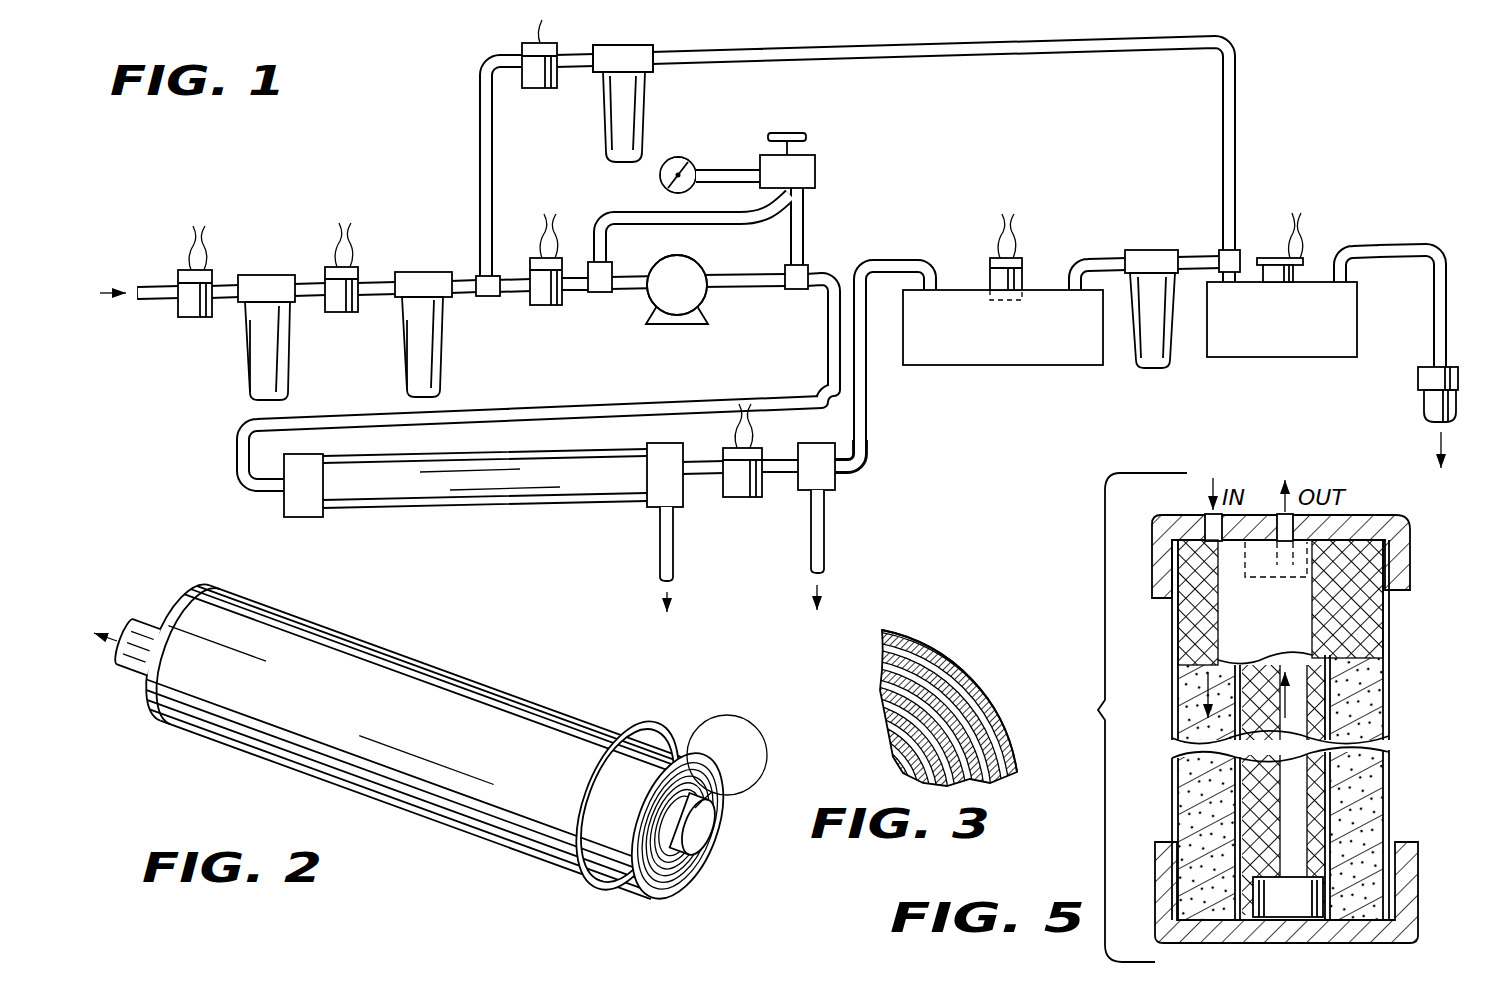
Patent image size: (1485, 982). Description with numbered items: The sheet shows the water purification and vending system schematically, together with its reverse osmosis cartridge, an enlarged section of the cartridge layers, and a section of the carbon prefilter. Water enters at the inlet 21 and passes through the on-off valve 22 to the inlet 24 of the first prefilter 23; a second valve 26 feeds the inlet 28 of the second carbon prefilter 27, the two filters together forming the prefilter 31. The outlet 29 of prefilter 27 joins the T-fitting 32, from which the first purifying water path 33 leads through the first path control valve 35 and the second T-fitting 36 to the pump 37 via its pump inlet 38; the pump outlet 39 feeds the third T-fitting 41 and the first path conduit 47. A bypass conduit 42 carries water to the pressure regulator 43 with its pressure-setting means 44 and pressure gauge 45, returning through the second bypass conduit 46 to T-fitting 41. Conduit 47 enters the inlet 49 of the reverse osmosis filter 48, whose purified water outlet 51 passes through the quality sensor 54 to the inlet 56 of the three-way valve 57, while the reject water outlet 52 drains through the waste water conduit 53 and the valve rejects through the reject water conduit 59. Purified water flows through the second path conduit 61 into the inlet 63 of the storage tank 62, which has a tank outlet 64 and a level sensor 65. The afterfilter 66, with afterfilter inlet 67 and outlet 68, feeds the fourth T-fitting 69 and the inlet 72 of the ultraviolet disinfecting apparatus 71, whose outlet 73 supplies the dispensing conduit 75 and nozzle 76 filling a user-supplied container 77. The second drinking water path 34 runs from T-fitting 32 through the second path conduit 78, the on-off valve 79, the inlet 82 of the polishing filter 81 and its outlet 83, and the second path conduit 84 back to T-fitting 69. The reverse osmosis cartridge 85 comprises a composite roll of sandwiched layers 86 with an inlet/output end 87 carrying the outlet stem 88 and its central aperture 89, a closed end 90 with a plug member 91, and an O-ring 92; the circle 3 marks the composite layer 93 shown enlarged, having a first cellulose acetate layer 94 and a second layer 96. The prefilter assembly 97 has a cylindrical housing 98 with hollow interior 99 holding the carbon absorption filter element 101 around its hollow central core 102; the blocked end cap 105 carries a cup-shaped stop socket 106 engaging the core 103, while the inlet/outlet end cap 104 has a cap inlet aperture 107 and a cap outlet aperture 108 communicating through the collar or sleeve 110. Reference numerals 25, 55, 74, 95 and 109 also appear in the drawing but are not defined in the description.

In FIG. 2, the circle 3 is at (712, 738).
In FIG. 1, the inlet 21 is at (140, 278).
In FIG. 1, the on-off valve 22 is at (192, 265).
In FIG. 1, the first prefilter 23 is at (257, 267).
In FIG. 1, the inlet 24 is at (224, 302).
In FIG. 1, the conduit 25 is at (303, 302).
In FIG. 1, the valve 26 is at (334, 265).
In FIG. 1, the second prefilter 27 is at (412, 268).
In FIG. 5, the second prefilter 27 is at (1415, 648).
In FIG. 1, the inlet 28 is at (392, 283).
In FIG. 1, the outlet 29 is at (460, 285).
In FIG. 1, the prefilter 31 is at (390, 352).
In FIG. 1, the T-fitting 32 is at (492, 297).
In FIG. 1, the first purifying water path 33 is at (533, 258).
In FIG. 1, the second drinking water path 34 is at (476, 158).
In FIG. 1, the first path control valve 35 is at (548, 305).
In FIG. 1, the second T-fitting 36 is at (604, 295).
In FIG. 1, the pump 37 is at (705, 303).
In FIG. 1, the pump inlet 38 is at (652, 270).
In FIG. 1, the pump outlet 39 is at (706, 265).
In FIG. 1, the third T-fitting 41 is at (800, 292).
In FIG. 1, the bypass conduit 42 is at (622, 219).
In FIG. 1, the pressure regulator 43 is at (816, 170).
In FIG. 1, the pressure-setting means 44 is at (790, 132).
In FIG. 1, the pressure gauge 45 is at (696, 170).
In FIG. 1, the second bypass conduit 46 is at (806, 215).
In FIG. 1, the first path conduit 47 is at (630, 398).
In FIG. 1, the reverse osmosis filter 48 is at (462, 516).
In FIG. 1, the inlet 49 is at (279, 505).
In FIG. 1, the purified water outlet 51 is at (686, 483).
In FIG. 1, the waste water outlet 52 is at (646, 508).
In FIG. 1, the waste water conduit 53 is at (659, 528).
In FIG. 1, the water quality sensor 54 is at (748, 500).
In FIG. 1, the elbow 55 is at (842, 504).
In FIG. 1, the inlet 56 is at (798, 482).
In FIG. 1, the 3-way valve 57 is at (842, 478).
In FIG. 1, the reject water conduit 59 is at (823, 522).
In FIG. 1, the second path conduit 61 is at (883, 262).
In FIG. 1, the storage tank 62 is at (1002, 366).
In FIG. 1, the inlet 63 is at (938, 290).
In FIG. 1, the tank outlet 64 is at (1074, 288).
In FIG. 1, the level sensor 65 is at (1018, 272).
In FIG. 1, the afterfilter 66 is at (1130, 365).
In FIG. 1, the afterfilter inlet 67 is at (1122, 252).
In FIG. 1, the outlet 68 is at (1183, 258).
In FIG. 1, the fourth T-fitting 69 is at (1238, 256).
In FIG. 1, the ultraviolet disinfecting apparatus 71 is at (1275, 363).
In FIG. 1, the apparatus inlet 72 is at (1250, 282).
In FIG. 1, the outlet 73 is at (1350, 278).
In FIG. 1, the sensor leads 74 is at (1306, 262).
In FIG. 1, the dispensing conduit 75 is at (1378, 236).
In FIG. 1, the dispenser nozzle 76 is at (1414, 396).
In FIG. 1, the user-supplied container 77 is at (1415, 450).
In FIG. 1, the second path conduit 78 is at (479, 228).
In FIG. 1, the on-off valve 79 is at (537, 90).
In FIG. 1, the polishing filter 81 is at (650, 134).
In FIG. 1, the inlet 82 is at (600, 73).
In FIG. 1, the outlet 83 is at (654, 62).
In FIG. 1, the second path conduit 84 is at (1000, 62).
In FIG. 2, the reverse osmosis filter cartridge 85 is at (430, 742).
In FIG. 2, the composite cylinder 86 is at (417, 737).
In FIG. 3, the composite cylinder 86 is at (985, 628).
In FIG. 2, the inlet/output end 87 is at (175, 649).
In FIG. 2, the outlet stem 88 is at (137, 646).
In FIG. 2, the central aperture 89 is at (122, 658).
In FIG. 2, the closed end 90 is at (677, 826).
In FIG. 2, the plug member 91 is at (696, 826).
In FIG. 2, the O-ring 92 is at (627, 805).
In FIG. 3, the composite layer 93 is at (850, 779).
In FIG. 3, the first layer 94 is at (850, 800).
In FIG. 3, the permeate carrier 95 is at (850, 800).
In FIG. 3, the second layer 96 is at (850, 800).
In FIG. 5, the prefilter container 97 is at (1136, 556).
In FIG. 5, the housing 98 is at (1180, 690).
In FIG. 5, the hollow interior portion 99 is at (1386, 690).
In FIG. 5, the carbon absorption filter element 101 is at (1188, 790).
In FIG. 5, the hollow central core 102 is at (1380, 752).
In FIG. 5, the core 103 is at (1293, 810).
In FIG. 5, the inlet/outlet end cap 104 is at (1398, 552).
In FIG. 5, the blocked end cap 105 is at (1400, 916).
In FIG. 5, the cup-shaped stop socket 106 is at (1298, 892).
In FIG. 5, the cap inlet aperture 107 is at (1208, 520).
In FIG. 5, the cap outlet aperture 108 is at (1282, 520).
In FIG. 5, the bottom screen 109 is at (1288, 884).
In FIG. 5, the collar 110 is at (1303, 578).